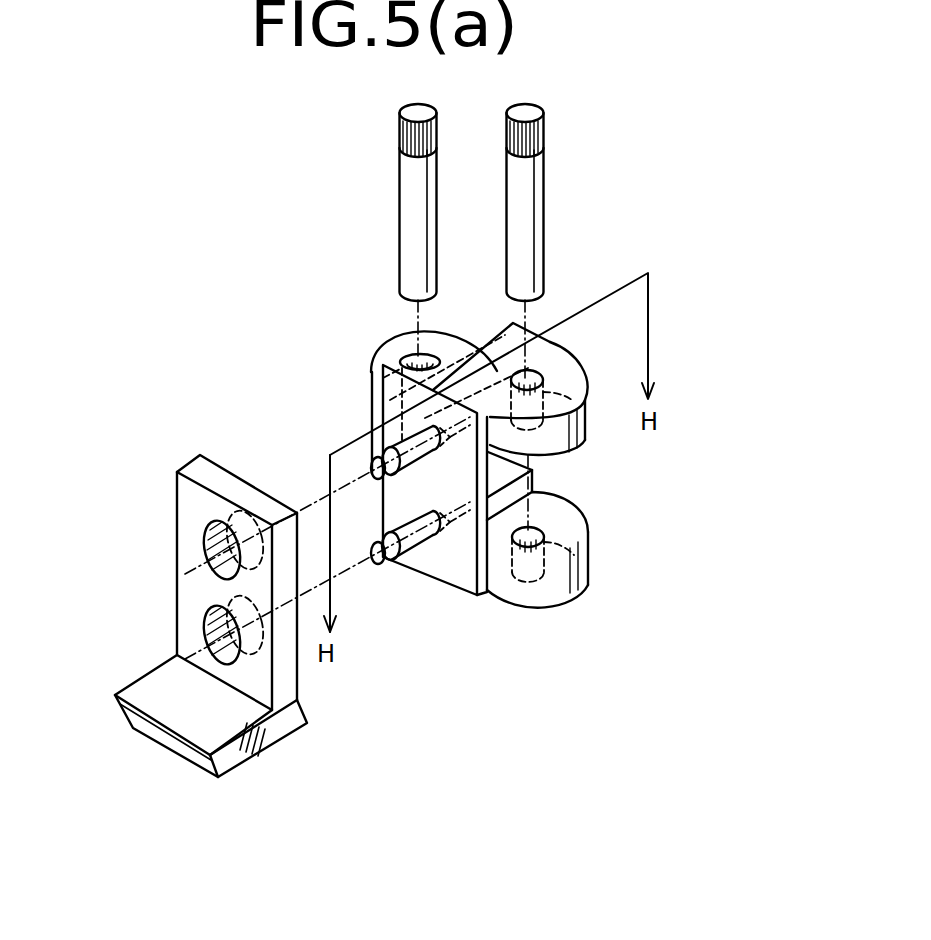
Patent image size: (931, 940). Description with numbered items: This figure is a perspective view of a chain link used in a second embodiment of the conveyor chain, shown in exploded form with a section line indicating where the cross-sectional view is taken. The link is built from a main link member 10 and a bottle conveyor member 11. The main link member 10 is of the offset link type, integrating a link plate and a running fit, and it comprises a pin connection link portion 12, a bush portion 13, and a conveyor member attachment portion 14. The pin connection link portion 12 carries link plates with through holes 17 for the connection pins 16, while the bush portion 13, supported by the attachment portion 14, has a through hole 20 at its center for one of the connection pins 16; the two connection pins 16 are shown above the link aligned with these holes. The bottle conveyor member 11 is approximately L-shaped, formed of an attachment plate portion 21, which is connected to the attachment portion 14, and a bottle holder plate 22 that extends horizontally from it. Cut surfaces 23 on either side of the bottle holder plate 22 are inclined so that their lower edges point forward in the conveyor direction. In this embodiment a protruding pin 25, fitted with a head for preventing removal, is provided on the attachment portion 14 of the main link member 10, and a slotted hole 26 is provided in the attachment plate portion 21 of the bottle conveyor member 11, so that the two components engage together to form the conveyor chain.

The main link member 10 is at (489, 466).
The bottle conveyor member 11 is at (192, 623).
The pin connection link portion 12 is at (557, 517).
The bush portion 13 is at (411, 496).
The conveyor member attachment portion 14 is at (460, 560).
The connection pins 16 is at (527, 212).
The through holes 17 is at (577, 353).
The through hole 20 is at (413, 355).
The attachment plate portion 21 is at (202, 606).
The bottle holder plate 22 is at (195, 720).
The cut surfaces 23 is at (238, 750).
The protruding pin 25 is at (400, 566).
The slotted hole 26 is at (206, 548).